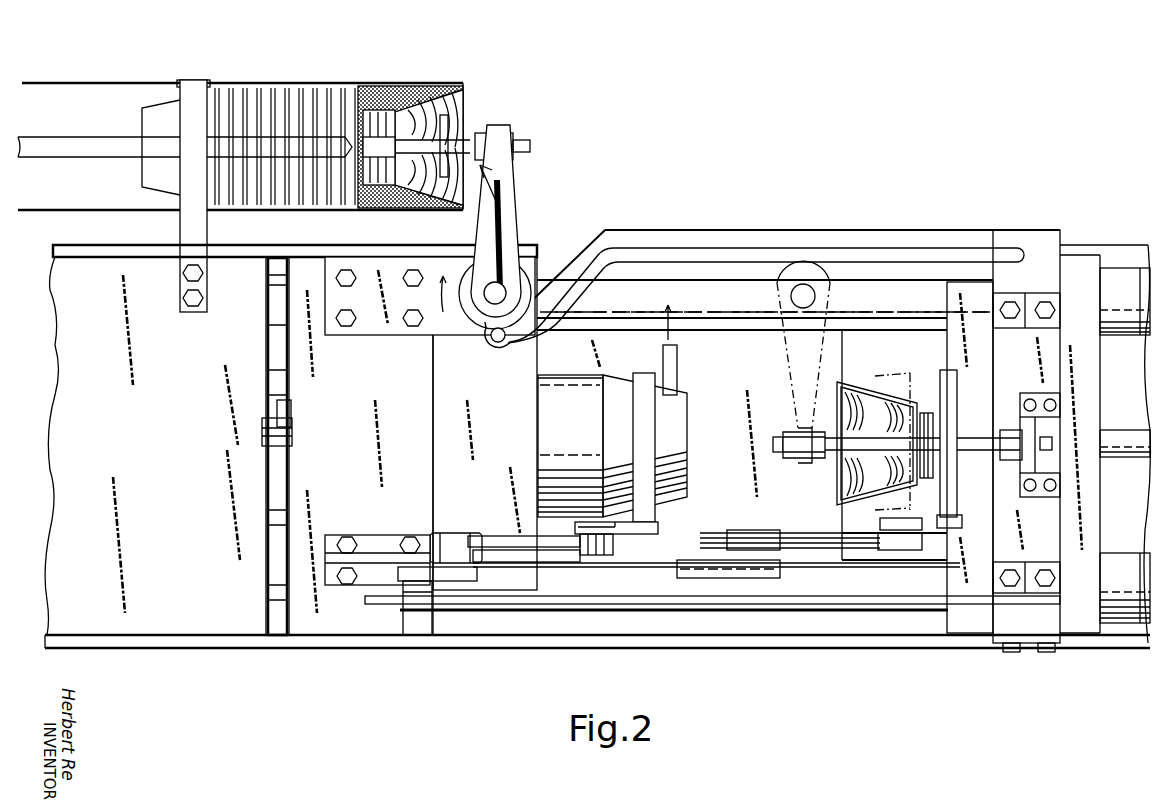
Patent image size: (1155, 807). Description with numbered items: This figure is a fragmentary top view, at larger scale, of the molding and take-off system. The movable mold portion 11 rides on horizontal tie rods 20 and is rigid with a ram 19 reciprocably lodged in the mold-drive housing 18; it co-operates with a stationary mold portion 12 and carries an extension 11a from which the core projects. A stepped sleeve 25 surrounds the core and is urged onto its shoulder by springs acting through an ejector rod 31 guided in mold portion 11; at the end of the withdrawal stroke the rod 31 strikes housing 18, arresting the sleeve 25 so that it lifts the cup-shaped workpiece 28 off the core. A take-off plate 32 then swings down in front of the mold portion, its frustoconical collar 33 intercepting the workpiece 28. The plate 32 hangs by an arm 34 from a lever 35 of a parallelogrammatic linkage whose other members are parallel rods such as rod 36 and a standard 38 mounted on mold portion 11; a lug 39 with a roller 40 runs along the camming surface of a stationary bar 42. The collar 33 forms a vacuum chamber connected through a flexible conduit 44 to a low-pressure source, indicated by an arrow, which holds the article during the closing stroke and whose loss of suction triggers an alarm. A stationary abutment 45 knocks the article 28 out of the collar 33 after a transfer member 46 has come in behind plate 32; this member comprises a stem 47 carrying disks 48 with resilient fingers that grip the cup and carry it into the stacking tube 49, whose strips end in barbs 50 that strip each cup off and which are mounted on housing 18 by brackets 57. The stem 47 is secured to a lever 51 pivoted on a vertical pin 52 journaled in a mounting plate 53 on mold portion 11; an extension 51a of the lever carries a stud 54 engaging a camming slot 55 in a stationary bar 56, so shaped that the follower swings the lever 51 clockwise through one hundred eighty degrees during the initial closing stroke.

The movable mold portion 11 is at (330, 625).
The extension 11a is at (456, 448).
The stationary mold portion 12 is at (965, 626).
The housing 18 is at (200, 625).
The ram 19 is at (268, 472).
The tie rods 20 is at (762, 332).
The stepped sleeve 25 is at (565, 450).
The workpiece 28 is at (300, 115).
The ejector rod 31 is at (293, 432).
The take-off plate 32 is at (656, 428).
The frustoconical collar 33 is at (687, 462).
The arm 34 is at (659, 524).
The lever 35 is at (623, 547).
The parallel rod 36 is at (524, 562).
The standard 38 is at (377, 544).
The lug 39 is at (445, 580).
The roller 40 is at (416, 632).
The stationary bar 42 is at (760, 610).
The flexible conduit 44 is at (679, 355).
The stationary abutment 45 is at (962, 440).
The transfer member 46 is at (500, 210).
The stem 47 is at (426, 208).
The disks 48 is at (435, 135).
The stacking tube 49 is at (56, 83).
The barbs 50 is at (465, 83).
The lever 51 is at (505, 172).
The extension 51a is at (640, 316).
The vertical pin 52 is at (490, 300).
The mounting plate 53 is at (382, 335).
The stud 54 is at (497, 343).
The camming slot 55 is at (700, 232).
The stationary bar 56 is at (1018, 232).
The brackets 57 is at (183, 228).